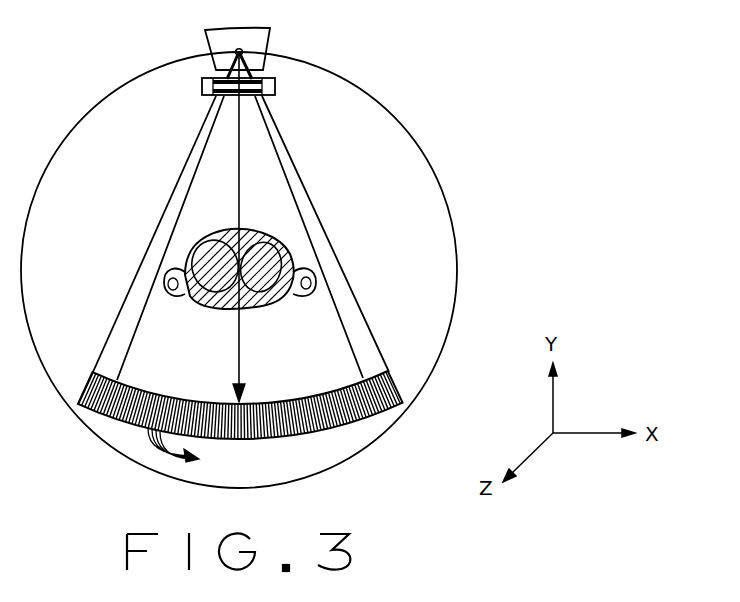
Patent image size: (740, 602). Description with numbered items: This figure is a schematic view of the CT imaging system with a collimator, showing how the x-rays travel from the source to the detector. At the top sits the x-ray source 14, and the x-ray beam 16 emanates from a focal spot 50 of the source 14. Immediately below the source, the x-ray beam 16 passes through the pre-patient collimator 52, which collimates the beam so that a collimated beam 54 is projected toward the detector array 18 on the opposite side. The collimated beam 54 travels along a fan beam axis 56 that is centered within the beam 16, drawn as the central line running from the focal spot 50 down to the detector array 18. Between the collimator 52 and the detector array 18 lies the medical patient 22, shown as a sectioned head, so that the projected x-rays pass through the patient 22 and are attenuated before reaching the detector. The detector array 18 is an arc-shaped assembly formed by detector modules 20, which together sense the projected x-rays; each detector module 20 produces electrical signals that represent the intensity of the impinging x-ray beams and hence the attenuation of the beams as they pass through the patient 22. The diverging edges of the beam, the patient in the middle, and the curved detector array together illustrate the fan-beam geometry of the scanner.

The x-ray source 14 is at (253, 45).
The focal spot 50 is at (236, 52).
The pre-patient collimator 52 is at (273, 87).
The x-ray beam 16 is at (318, 170).
The collimated beam 54 is at (117, 310).
The medical patient 22 is at (250, 230).
The fan beam axis 56 is at (241, 324).
The detector array 18 is at (399, 370).
The detector modules 20 is at (192, 451).